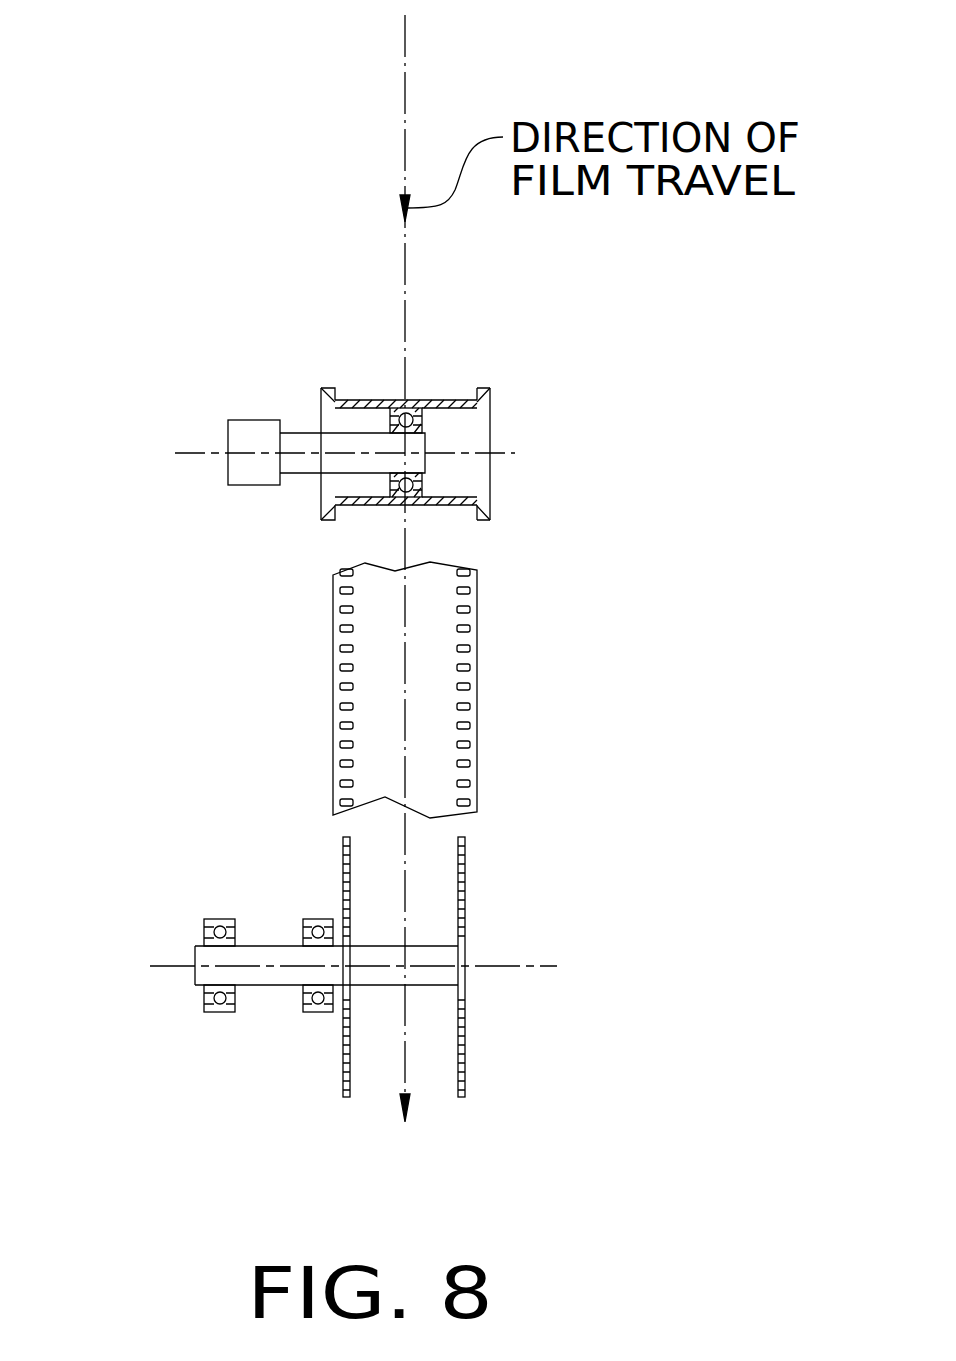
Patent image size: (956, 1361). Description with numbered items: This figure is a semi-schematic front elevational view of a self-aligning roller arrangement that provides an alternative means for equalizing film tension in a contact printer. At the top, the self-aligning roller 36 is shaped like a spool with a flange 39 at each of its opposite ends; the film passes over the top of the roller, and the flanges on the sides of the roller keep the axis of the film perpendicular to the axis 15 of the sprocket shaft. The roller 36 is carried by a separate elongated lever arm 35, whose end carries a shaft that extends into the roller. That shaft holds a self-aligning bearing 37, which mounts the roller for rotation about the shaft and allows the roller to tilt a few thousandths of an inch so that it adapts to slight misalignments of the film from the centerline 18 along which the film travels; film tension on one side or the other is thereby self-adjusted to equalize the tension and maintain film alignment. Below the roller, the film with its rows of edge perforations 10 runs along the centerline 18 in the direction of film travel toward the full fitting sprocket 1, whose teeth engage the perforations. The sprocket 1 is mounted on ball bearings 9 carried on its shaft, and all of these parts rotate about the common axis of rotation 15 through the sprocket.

The full fitting sprocket 1 is at (342, 862).
The ball bearings 9 is at (224, 1012).
The perforations 10 is at (340, 668).
The centerline through sprocket 15 is at (537, 966).
The centerline 18 is at (407, 97).
The elongated lever arm 35 is at (228, 433).
The self-aligning roller 36 is at (490, 432).
The self-aligning bearing 37 is at (425, 463).
The flange 39 is at (333, 388).